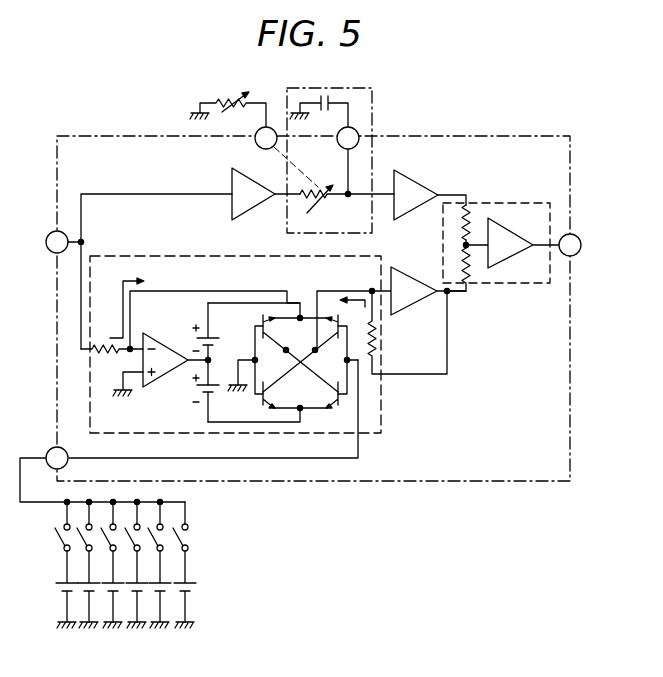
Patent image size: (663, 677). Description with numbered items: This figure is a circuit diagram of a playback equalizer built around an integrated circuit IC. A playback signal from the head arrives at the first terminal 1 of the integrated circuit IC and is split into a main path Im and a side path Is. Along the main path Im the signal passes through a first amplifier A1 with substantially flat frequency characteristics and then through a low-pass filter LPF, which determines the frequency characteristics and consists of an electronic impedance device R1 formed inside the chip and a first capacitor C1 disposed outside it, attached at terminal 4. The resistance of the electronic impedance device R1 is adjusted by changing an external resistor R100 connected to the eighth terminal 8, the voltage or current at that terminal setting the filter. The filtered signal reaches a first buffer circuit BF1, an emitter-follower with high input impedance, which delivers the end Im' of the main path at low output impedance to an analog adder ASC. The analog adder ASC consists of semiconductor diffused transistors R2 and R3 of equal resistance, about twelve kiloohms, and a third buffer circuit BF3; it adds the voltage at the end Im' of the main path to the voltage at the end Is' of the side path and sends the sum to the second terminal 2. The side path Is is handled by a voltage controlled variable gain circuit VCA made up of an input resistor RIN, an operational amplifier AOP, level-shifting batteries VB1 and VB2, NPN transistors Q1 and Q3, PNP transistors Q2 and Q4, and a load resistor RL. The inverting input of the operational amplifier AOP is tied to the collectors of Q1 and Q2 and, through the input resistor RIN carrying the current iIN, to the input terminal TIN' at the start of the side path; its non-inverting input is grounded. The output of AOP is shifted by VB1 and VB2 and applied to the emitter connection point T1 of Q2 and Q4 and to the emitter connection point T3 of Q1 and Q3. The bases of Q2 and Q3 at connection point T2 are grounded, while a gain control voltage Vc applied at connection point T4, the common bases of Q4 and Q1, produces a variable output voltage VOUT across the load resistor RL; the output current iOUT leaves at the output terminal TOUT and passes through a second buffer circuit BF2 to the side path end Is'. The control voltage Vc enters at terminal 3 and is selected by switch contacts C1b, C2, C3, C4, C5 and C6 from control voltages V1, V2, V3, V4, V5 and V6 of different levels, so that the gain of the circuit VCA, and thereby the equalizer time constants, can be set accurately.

The first terminal 1 is at (49, 242).
The second terminal 2 is at (590, 245).
The control voltage terminal 3 is at (57, 458).
The terminal 4 is at (348, 138).
The eighth terminal 8 is at (266, 138).
The integrated circuit IC is at (470, 483).
The main path Im is at (128, 182).
The first amplifier A1 is at (253, 194).
The electronic impedance device R1 is at (345, 207).
The low-pass filter LPF is at (372, 90).
The first capacitor C1 is at (319, 116).
The external resistor R100 is at (228, 97).
The first buffer circuit BF1 is at (416, 175).
The end of main path Im' is at (453, 180).
The analog adder ASC is at (527, 313).
The semiconductor diffused transistor R2 is at (458, 226).
The semiconductor diffused transistor R3 is at (458, 260).
The third buffer circuit BF3 is at (506, 240).
The buffer amplifier BF2 is at (392, 268).
The end of side path Is' is at (461, 312).
The load resistor RL is at (376, 335).
The variable output voltage VOUT is at (380, 308).
The voltage controlled variable gain circuit VCA is at (435, 427).
The input resistor RIN is at (112, 363).
The input terminal TIN' is at (104, 326).
The side path Is is at (70, 371).
The input current iIN is at (137, 305).
The operational amplifier AOP is at (162, 378).
The level-shifting battery VB1 is at (190, 328).
The level-shifting battery VB2 is at (216, 398).
The NPN-type transistor Q1 is at (330, 404).
The PNP-type transistor Q2 is at (256, 328).
The NPN-type transistor Q3 is at (268, 392).
The PNP-type transistor Q4 is at (318, 334).
The connection point T1 is at (298, 314).
The connection point T2 is at (252, 354).
The connection point T3 is at (304, 410).
The connection point T4 is at (342, 362).
The output terminal of VCA TOUT is at (370, 288).
The output current iOUT is at (343, 308).
The control voltage Vc is at (362, 454).
The switch contact C1b is at (57, 541).
The switch contact C2 is at (78, 527).
The switch contact C3 is at (104, 527).
The switch contact C4 is at (124, 527).
The switch contact C5 is at (148, 527).
The switch contact C6 is at (191, 565).
The control voltage V1 is at (56, 586).
The control voltage V2 is at (82, 592).
The control voltage V3 is at (107, 592).
The control voltage V4 is at (132, 592).
The control voltage V5 is at (156, 592).
The control voltage V6 is at (189, 586).